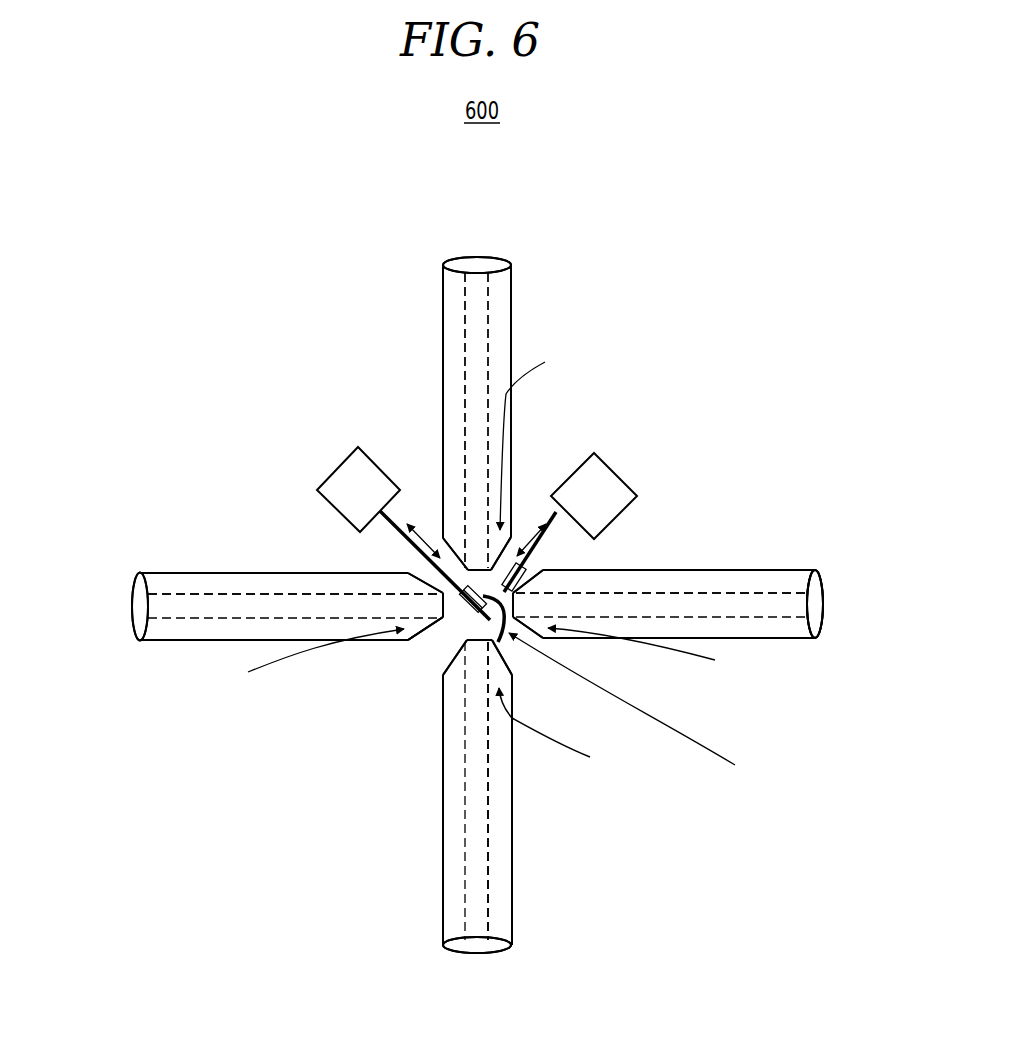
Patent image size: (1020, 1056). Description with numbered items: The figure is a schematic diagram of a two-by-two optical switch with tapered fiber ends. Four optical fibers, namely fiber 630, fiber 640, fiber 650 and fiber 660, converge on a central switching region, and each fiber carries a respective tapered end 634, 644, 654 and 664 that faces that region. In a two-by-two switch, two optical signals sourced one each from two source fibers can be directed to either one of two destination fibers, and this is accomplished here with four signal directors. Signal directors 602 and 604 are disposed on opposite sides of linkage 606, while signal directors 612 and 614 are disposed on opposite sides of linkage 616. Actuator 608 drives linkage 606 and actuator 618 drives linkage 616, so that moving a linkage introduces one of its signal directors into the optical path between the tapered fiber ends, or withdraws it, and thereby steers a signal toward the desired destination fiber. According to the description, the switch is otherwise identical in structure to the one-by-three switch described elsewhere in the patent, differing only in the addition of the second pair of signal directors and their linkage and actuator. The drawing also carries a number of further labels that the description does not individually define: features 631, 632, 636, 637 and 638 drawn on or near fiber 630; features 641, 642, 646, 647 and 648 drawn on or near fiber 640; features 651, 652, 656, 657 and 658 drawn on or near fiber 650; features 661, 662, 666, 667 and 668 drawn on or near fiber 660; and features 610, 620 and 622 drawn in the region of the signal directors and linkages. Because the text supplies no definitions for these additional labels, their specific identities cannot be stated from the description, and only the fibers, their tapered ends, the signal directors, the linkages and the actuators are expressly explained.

The signal director 602 is at (492, 688).
The signal director 604 is at (462, 610).
The linkage 606 is at (405, 526).
The actuator 608 is at (335, 468).
The light beam from right fiber 610 is at (630, 712).
The signal director 612 is at (540, 437).
The signal director 614 is at (555, 592).
The linkage 616 is at (546, 533).
The actuator 618 is at (618, 480).
The bidirectional light in first waveguide 620 is at (405, 521).
The bidirectional light in second waveguide 622 is at (546, 521).
The fiber 630 is at (160, 573).
The left fiber core 631 is at (198, 593).
The left fiber end 632 is at (135, 627).
The tapered end 634 is at (307, 661).
The left fiber upper angled face 636 is at (425, 578).
The left fiber lower angled face 637 is at (438, 624).
The left fiber end face 638 is at (434, 621).
The fiber 640 is at (514, 292).
The upper fiber core 641 is at (490, 352).
The upper fiber end 642 is at (466, 262).
The tapered end 644 is at (511, 432).
The upper fiber angled face 646 is at (519, 556).
The upper fiber left angled face 647 is at (445, 550).
The upper fiber core region 648 is at (467, 520).
The fiber 650 is at (730, 570).
The right fiber end 651 is at (822, 582).
The right fiber end face 652 is at (823, 620).
The tapered end 654 is at (522, 596).
The right fiber lower angled face 656 is at (532, 632).
The right fiber upper angled face 657 is at (530, 562).
The light beam in right fiber 658 is at (651, 651).
The fiber 660 is at (514, 790).
The lower fiber core 661 is at (490, 860).
The lower fiber end 662 is at (470, 953).
The tapered end 664 is at (564, 810).
The lower fiber right angled face 666 is at (508, 638).
The lower fiber left angled face 667 is at (447, 660).
The coupling light path 668 is at (500, 640).